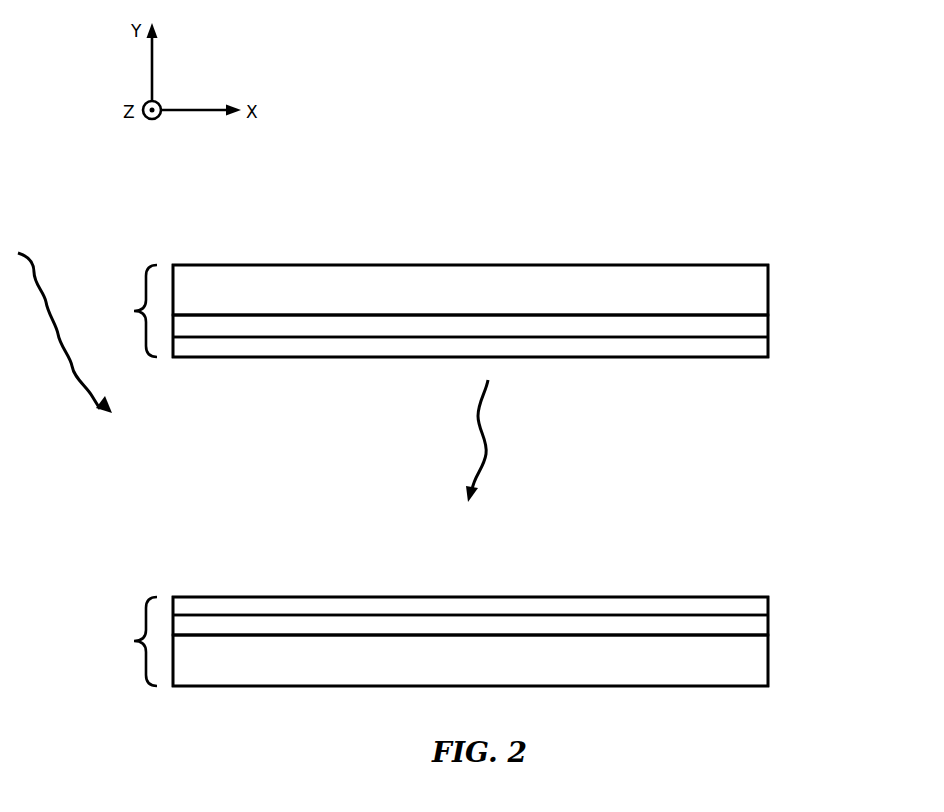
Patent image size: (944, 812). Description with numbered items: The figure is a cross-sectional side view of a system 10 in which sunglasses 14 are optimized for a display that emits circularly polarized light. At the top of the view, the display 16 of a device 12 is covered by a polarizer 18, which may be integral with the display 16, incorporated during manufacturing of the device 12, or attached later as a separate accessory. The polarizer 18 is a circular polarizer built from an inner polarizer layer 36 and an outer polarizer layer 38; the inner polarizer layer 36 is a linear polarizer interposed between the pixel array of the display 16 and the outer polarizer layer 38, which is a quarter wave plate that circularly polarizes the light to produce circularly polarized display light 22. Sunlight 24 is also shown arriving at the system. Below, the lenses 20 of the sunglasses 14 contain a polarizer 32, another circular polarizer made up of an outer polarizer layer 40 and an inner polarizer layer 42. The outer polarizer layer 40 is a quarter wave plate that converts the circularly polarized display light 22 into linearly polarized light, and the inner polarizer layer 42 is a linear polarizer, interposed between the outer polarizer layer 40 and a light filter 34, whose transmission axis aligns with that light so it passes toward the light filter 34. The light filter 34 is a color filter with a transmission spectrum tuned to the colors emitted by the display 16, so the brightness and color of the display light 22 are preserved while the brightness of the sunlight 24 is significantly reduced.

The system 10 is at (830, 265).
The device 12 is at (134, 311).
The sunglasses 14 is at (134, 641).
The display 16 is at (758, 287).
The polarizer 18 is at (773, 315).
The lenses 20 is at (640, 574).
The circularly polarized display light 22 is at (485, 445).
The sunlight 24 is at (32, 265).
The polarizer 32 is at (773, 597).
The light filter 34 is at (758, 660).
The inner polarizer layer 36 is at (615, 327).
The outer polarizer layer 38 is at (675, 347).
The outer polarizer layer 40 is at (372, 605).
The inner polarizer layer 42 is at (427, 625).